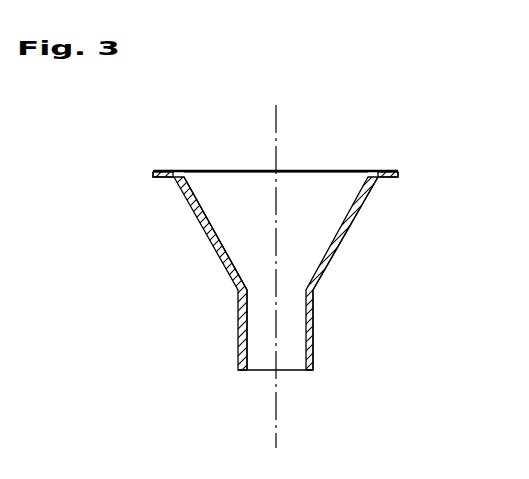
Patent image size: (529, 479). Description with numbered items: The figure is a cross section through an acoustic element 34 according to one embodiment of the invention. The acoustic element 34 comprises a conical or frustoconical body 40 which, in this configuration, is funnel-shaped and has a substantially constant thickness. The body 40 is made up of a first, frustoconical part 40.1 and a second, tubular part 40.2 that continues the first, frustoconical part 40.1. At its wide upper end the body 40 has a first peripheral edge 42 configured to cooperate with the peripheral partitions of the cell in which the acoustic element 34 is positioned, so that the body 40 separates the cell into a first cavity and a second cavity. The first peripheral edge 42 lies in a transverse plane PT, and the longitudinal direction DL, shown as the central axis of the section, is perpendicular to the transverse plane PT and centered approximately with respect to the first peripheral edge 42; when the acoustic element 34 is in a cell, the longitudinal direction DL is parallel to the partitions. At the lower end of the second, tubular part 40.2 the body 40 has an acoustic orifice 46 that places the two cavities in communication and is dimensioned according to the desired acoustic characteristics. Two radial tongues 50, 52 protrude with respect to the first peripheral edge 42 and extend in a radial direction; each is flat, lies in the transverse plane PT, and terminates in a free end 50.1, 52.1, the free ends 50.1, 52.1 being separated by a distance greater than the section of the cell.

The acoustic element 34 is at (213, 313).
The body 40 is at (347, 282).
The first, frustoconical part 40.1 is at (348, 232).
The second, tubular part 40.2 is at (315, 338).
The first peripheral edge 42 is at (373, 168).
The acoustic orifice 46 is at (288, 371).
The radial tongue 50 is at (168, 177).
The free end 50.1 is at (153, 173).
The radial tongue 52 is at (390, 170).
The free end 52.1 is at (398, 175).
The transverse plane PT is at (235, 168).
The longitudinal direction DL is at (277, 153).